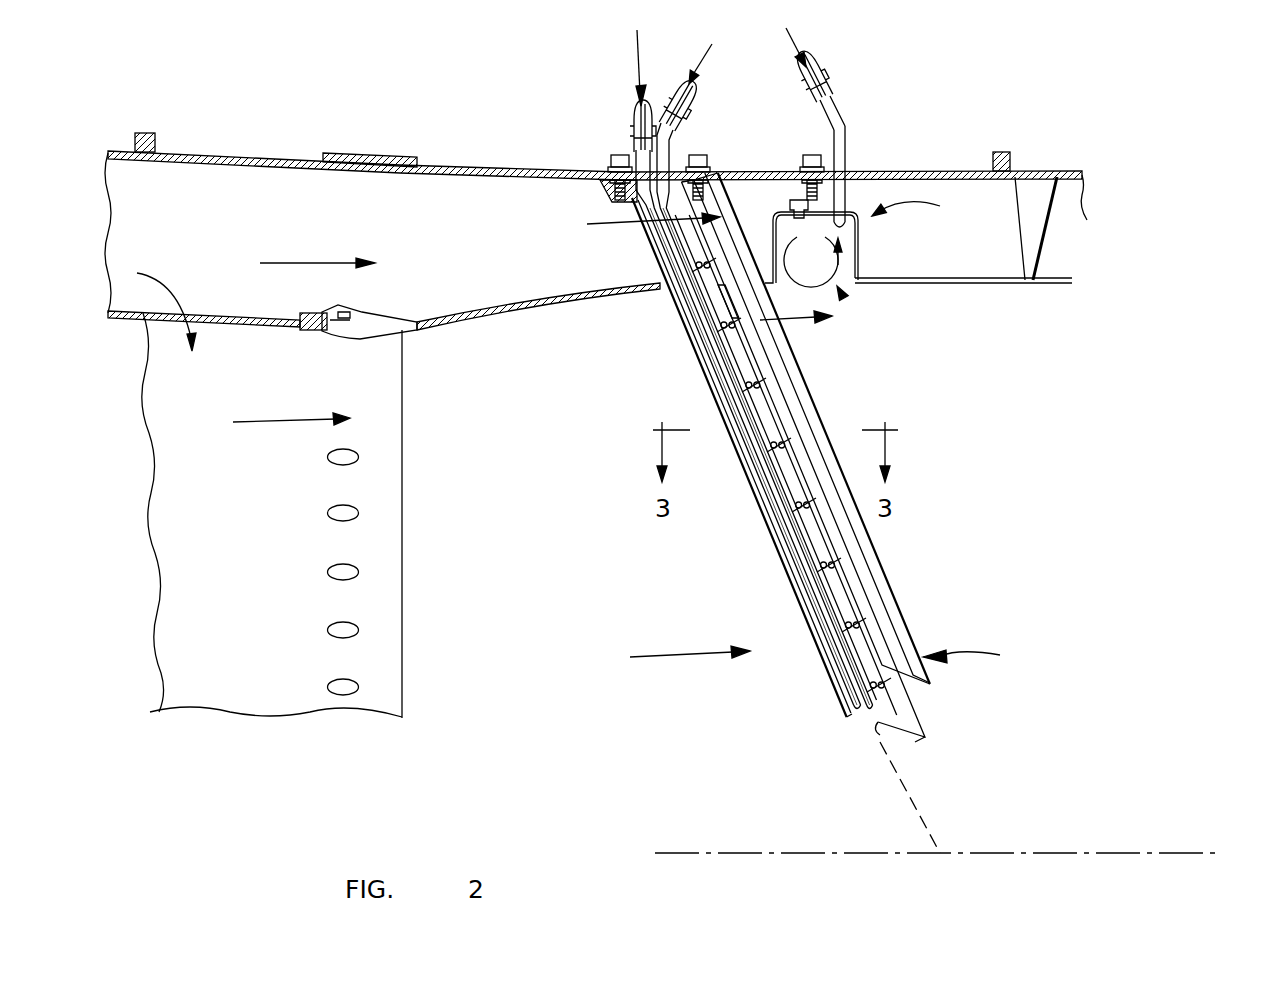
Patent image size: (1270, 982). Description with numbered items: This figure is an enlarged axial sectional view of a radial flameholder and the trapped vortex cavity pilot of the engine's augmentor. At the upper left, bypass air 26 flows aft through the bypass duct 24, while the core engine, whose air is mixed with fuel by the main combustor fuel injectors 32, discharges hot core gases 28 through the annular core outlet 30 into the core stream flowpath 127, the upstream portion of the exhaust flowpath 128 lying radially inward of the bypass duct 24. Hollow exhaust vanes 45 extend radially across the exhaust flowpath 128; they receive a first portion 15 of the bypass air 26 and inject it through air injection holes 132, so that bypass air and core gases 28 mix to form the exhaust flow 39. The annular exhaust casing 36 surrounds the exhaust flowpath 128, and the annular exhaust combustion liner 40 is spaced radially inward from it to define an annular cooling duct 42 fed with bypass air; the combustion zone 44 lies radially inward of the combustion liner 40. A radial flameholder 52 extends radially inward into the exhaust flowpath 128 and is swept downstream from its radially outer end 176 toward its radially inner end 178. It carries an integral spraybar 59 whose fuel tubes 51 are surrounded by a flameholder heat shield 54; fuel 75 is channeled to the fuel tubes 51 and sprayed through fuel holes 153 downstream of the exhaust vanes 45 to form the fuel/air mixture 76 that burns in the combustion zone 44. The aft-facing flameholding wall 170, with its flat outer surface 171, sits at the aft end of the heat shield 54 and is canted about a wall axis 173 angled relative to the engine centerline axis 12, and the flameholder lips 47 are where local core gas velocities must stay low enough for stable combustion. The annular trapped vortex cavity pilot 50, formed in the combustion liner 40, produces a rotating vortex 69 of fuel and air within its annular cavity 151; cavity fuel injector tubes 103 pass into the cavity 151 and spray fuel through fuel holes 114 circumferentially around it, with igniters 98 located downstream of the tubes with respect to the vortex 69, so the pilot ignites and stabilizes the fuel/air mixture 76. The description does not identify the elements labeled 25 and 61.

The centerline axis 12 is at (1108, 852).
The first portion of bypass air 15 is at (160, 282).
The bypass duct 24 is at (176, 236).
The outer duct wall 25 is at (213, 182).
The bypass air 26 is at (293, 265).
The core gases 28 is at (297, 422).
The annular core outlet 30 is at (250, 377).
The main combustor fuel injectors 32 is at (325, 166).
The annular exhaust casing 36 is at (1080, 176).
The exhaust flow 39 is at (685, 657).
The annular exhaust combustion liner 40 is at (1018, 284).
The annular cooling duct 42 is at (1068, 186).
The exhaust section combustion zone 44 is at (962, 435).
The exhaust vanes 45 is at (405, 556).
The flameholder lips 47 is at (815, 398).
The annular trapped vortex cavity pilot 50 is at (873, 237).
The fuel tubes 51 is at (835, 600).
The radial flameholders 52 is at (982, 656).
The flameholder heat shield 54 is at (764, 530).
The integral spraybar 59 is at (787, 566).
The mounting bolts 61 is at (716, 177).
The annular rotating vortex 69 is at (860, 278).
The fuel 75 is at (637, 42).
The fuel/air mixture 76 is at (978, 493).
The igniters 98 is at (792, 205).
The cavity fuel injector tubes 103 is at (840, 128).
The fuel holes 114 is at (860, 206).
The core stream flowpath 127 is at (583, 505).
The exhaust flowpath 128 is at (1068, 577).
The air injection holes 132 is at (343, 515).
The annular cavity 151 is at (842, 295).
The fuel holes 153 is at (676, 252).
The flameholding wall 170 is at (877, 548).
The flat outer surface 171 is at (848, 466).
The wall axis 173 is at (925, 802).
The radially outer ends 176 is at (690, 328).
The radially inner ends 178 is at (938, 688).